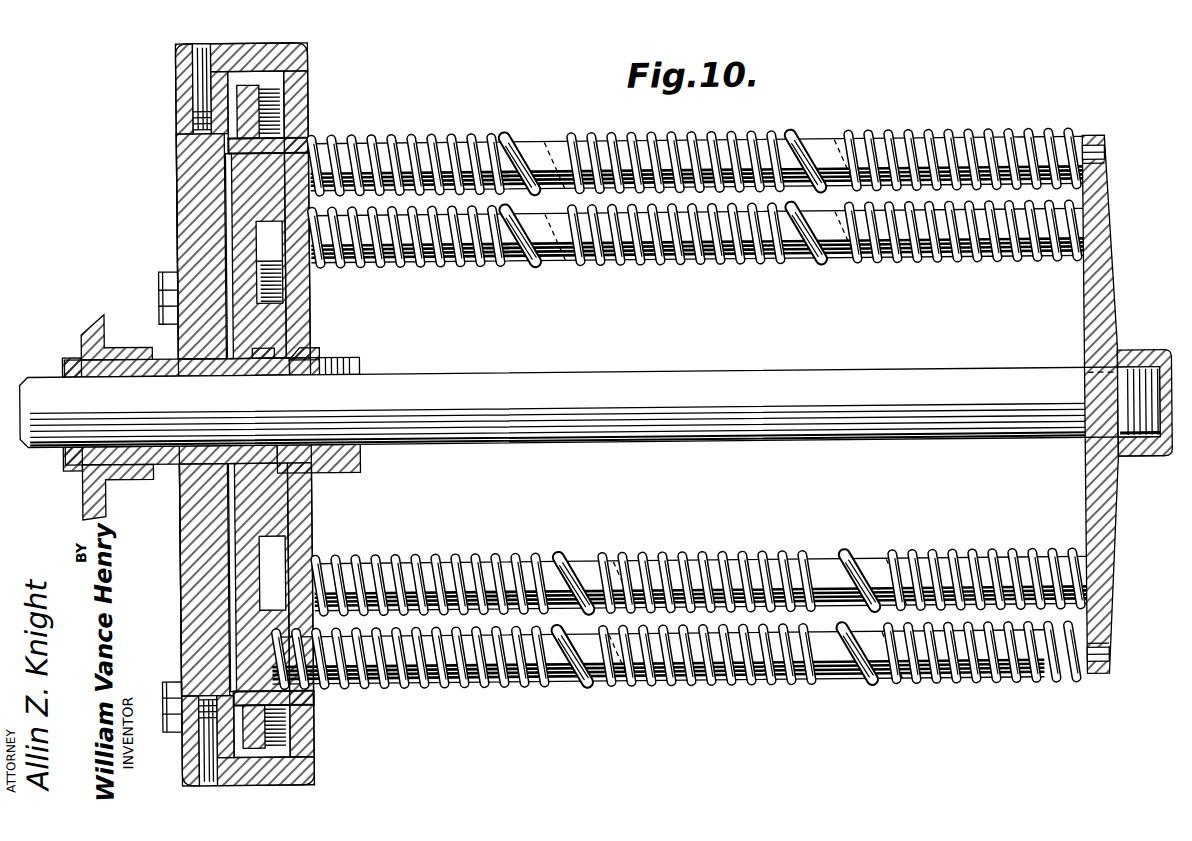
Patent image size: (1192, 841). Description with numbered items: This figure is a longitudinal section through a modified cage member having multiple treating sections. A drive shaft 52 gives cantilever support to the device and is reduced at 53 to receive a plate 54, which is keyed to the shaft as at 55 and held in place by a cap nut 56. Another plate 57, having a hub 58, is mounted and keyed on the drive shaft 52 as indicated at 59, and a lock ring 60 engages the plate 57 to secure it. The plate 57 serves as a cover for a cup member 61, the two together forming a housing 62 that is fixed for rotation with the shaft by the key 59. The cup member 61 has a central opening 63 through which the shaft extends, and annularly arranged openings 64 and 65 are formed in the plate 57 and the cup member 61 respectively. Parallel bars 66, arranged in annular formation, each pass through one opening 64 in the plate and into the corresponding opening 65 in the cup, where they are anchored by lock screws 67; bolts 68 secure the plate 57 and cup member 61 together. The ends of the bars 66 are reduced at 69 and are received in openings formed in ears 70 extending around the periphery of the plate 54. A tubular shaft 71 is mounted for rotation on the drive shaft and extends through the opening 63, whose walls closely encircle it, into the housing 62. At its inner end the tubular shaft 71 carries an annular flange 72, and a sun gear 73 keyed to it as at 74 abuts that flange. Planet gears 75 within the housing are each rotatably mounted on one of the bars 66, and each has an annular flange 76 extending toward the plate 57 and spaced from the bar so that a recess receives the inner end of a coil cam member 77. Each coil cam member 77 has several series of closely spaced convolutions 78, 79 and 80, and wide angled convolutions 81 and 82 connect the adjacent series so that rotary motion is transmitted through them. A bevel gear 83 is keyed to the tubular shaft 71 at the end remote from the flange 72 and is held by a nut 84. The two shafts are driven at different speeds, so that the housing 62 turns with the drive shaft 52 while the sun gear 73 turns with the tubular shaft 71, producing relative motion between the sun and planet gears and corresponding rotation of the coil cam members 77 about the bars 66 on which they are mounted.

The drive shaft 52 is at (575, 376).
The reduced portion of shaft 53 is at (1135, 400).
The plate 54 is at (1118, 296).
The key 55 is at (1100, 360).
The cap nut 56 is at (1145, 462).
The plate 57 is at (305, 330).
The hub 58 is at (320, 468).
The key 59 is at (286, 378).
The lock ring 60 is at (356, 364).
The cup member 61 is at (179, 228).
The housing 62 is at (265, 42).
The opening 63 is at (216, 373).
The openings 64 is at (300, 135).
The openings 65 is at (179, 202).
The parallel bars 66 is at (940, 138).
The lock screws 67 is at (198, 122).
The bolts 68 is at (165, 282).
The reduced portions 69 is at (1108, 156).
The ear 70 is at (1108, 184).
The tubular shaft 71 is at (150, 373).
The annular flange 72 is at (302, 350).
The sun gear 73 is at (275, 545).
The key 74 is at (262, 373).
The planet gears 75 is at (282, 90).
The annular flange 76 is at (282, 106).
The coil cam members 77 is at (462, 140).
The series of convolutions 78 is at (398, 140).
The series of convolutions 79 is at (682, 140).
The series of convolutions 80 is at (996, 138).
The wide angled convolution 81 is at (520, 136).
The wide angled convolution 82 is at (814, 140).
The bevel gear 83 is at (95, 314).
The nut 84 is at (68, 356).